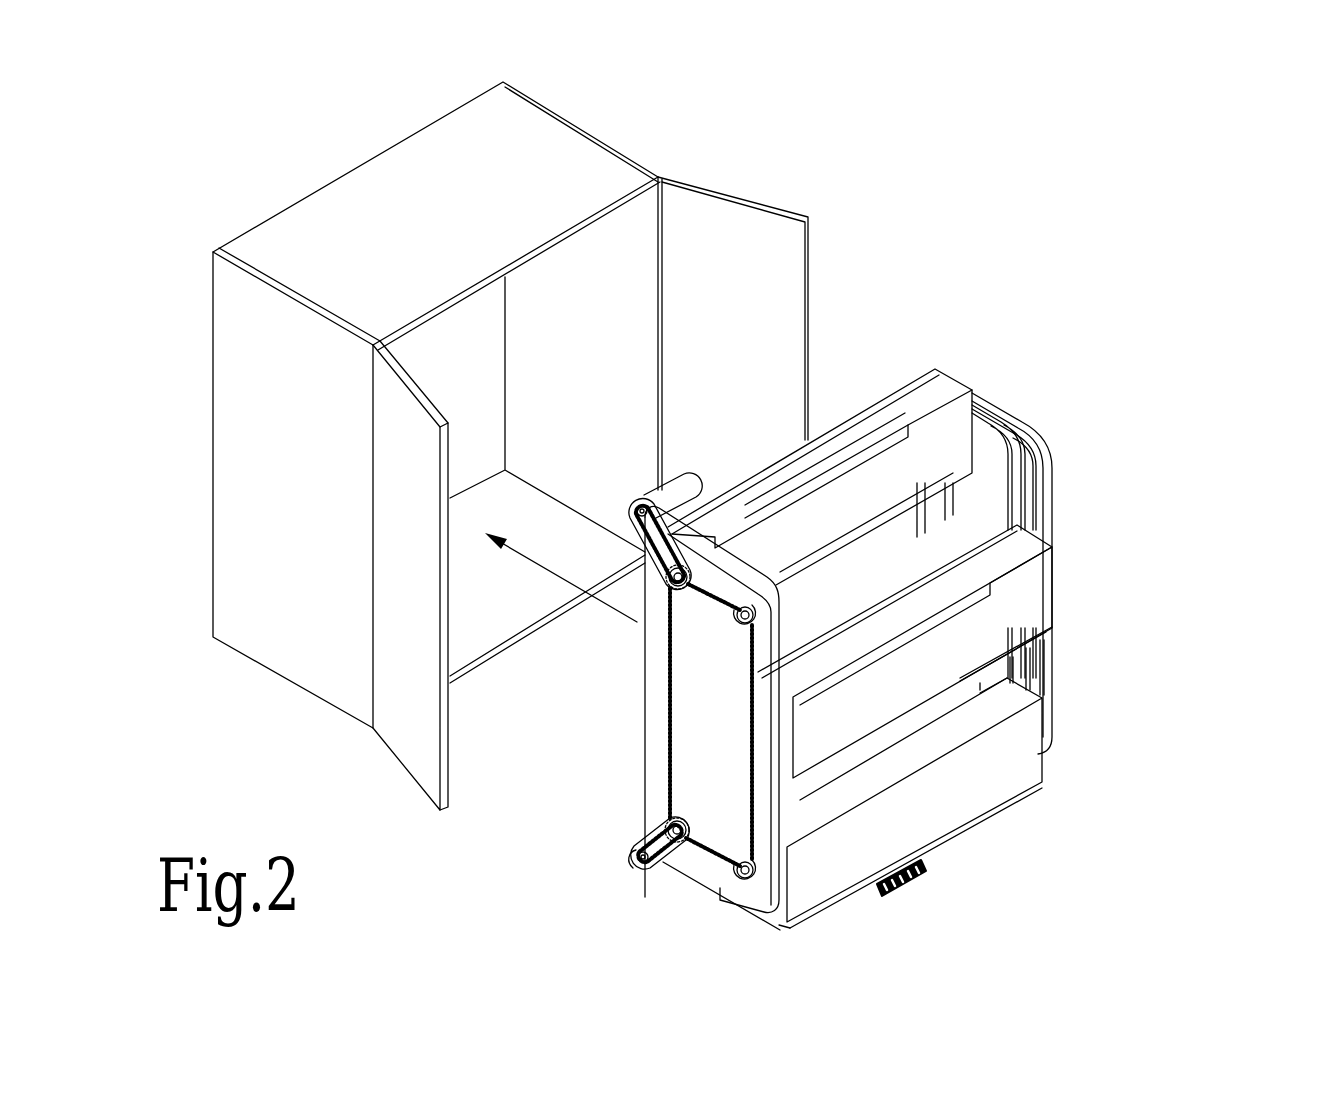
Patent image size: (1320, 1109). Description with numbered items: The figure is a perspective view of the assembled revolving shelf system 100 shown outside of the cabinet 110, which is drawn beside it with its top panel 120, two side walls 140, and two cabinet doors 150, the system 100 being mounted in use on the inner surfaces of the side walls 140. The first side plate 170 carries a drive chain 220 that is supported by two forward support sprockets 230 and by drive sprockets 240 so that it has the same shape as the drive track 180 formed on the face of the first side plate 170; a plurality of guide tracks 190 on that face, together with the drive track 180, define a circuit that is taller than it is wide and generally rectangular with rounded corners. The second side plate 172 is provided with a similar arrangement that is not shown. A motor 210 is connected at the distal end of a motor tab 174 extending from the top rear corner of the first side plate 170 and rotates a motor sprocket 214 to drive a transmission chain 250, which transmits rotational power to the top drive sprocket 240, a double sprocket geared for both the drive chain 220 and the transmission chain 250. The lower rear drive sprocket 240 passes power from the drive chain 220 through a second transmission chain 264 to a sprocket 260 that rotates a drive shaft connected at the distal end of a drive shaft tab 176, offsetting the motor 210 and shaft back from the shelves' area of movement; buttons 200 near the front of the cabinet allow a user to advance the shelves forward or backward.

The shelf system 100 is at (1152, 328).
The cabinet 110 is at (500, 86).
The top panel 120 is at (298, 268).
The side walls 140 is at (260, 432).
The cabinet doors 150 is at (400, 610).
The first side plate 170 is at (762, 823).
The second side plate 172 is at (1043, 447).
The motor tab 174 is at (644, 492).
The drive shaft tab 176 is at (643, 860).
The drive track 180 is at (1023, 485).
The guide tracks 190 is at (986, 452).
The buttons 200 is at (922, 875).
The motor 210 is at (676, 494).
The motor sprocket 214 is at (638, 511).
The drive chain 220 is at (668, 725).
The support sprockets 230 is at (748, 618).
The drive sprocket 240 is at (687, 576).
The transmission chain 250 is at (657, 525).
The sprocket 260 is at (641, 857).
The transmission chain 264 is at (652, 838).